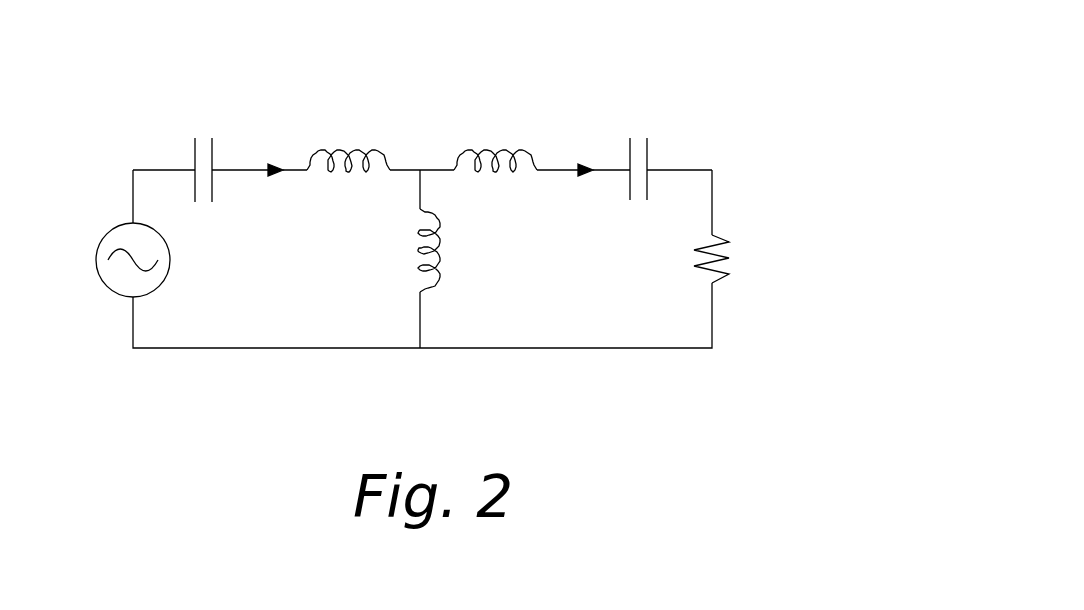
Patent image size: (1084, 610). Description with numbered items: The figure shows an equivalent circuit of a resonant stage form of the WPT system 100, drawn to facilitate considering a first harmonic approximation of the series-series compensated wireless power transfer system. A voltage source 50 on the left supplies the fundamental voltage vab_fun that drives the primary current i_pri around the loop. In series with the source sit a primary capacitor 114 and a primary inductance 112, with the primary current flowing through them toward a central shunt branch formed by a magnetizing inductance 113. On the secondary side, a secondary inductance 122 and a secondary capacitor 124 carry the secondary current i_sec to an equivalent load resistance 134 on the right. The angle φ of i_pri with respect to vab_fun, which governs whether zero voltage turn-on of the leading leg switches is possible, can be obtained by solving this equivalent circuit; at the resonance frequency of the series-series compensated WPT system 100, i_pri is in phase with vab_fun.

The WPT system 100 is at (435, 183).
The voltage source 50 is at (115, 290).
The primary capacitor 114 is at (193, 153).
The primary leakage inductance 112 is at (340, 150).
The secondary leakage inductance 122 is at (492, 150).
The magnetizing inductance 113 is at (438, 258).
The secondary capacitor 124 is at (648, 153).
The equivalent load resistance 134 is at (728, 255).